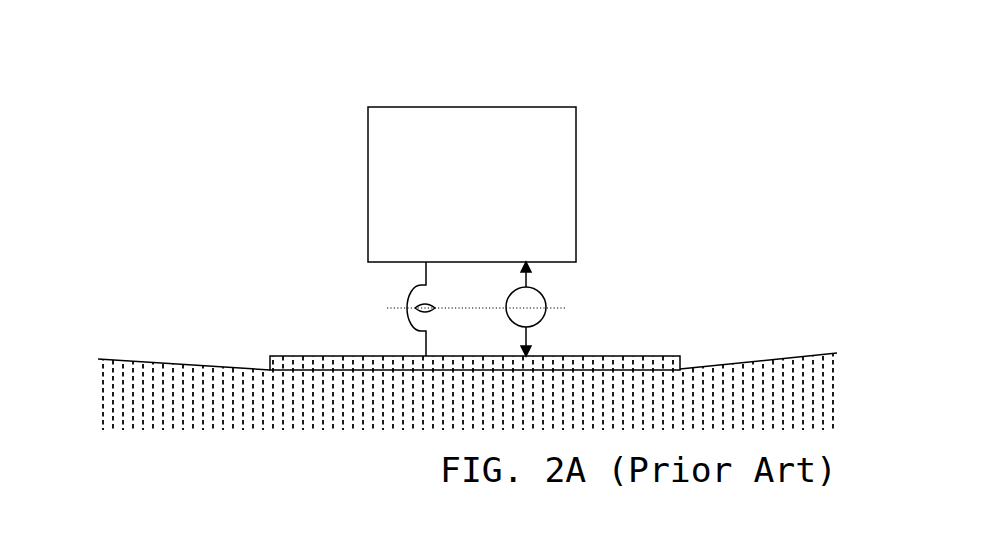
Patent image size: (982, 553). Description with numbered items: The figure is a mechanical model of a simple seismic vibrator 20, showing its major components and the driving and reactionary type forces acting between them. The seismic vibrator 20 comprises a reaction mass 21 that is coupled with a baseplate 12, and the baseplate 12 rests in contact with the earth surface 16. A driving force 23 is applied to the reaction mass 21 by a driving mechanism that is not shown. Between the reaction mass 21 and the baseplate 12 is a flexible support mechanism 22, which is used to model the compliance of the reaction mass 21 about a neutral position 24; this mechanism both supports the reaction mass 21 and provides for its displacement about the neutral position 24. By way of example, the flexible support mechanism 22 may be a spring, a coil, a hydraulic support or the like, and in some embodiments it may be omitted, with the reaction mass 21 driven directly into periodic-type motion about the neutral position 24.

The seismic vibrator 20 is at (462, 60).
The reaction mass 21 is at (576, 187).
The flexible support mechanism 22 is at (413, 294).
The driving force f1 23 is at (545, 294).
The neutral position 24 is at (560, 308).
The baseplate 12 is at (322, 356).
The earth surface 16 is at (746, 360).